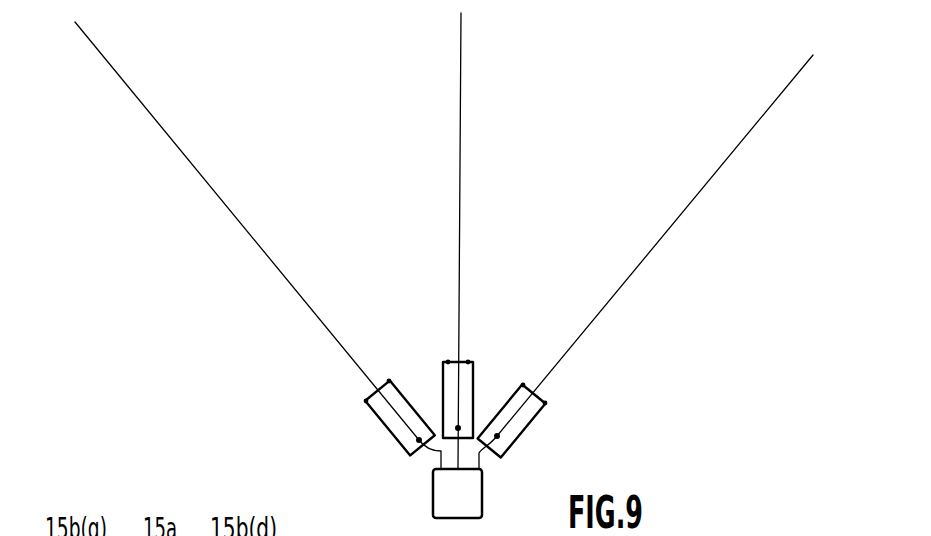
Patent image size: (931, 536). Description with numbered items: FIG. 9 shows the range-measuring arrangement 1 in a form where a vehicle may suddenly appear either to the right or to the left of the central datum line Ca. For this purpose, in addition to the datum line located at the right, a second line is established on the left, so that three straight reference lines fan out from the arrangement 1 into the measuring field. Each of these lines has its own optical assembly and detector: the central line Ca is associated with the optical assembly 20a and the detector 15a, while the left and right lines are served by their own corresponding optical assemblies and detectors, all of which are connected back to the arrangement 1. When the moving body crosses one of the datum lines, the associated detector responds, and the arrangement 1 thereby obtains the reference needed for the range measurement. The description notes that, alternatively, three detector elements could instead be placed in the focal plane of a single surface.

The arrangement 1 is at (467, 496).
The detector 15a is at (458, 428).
The optical assembly 20a is at (443, 380).
The datum line Ca is at (461, 58).